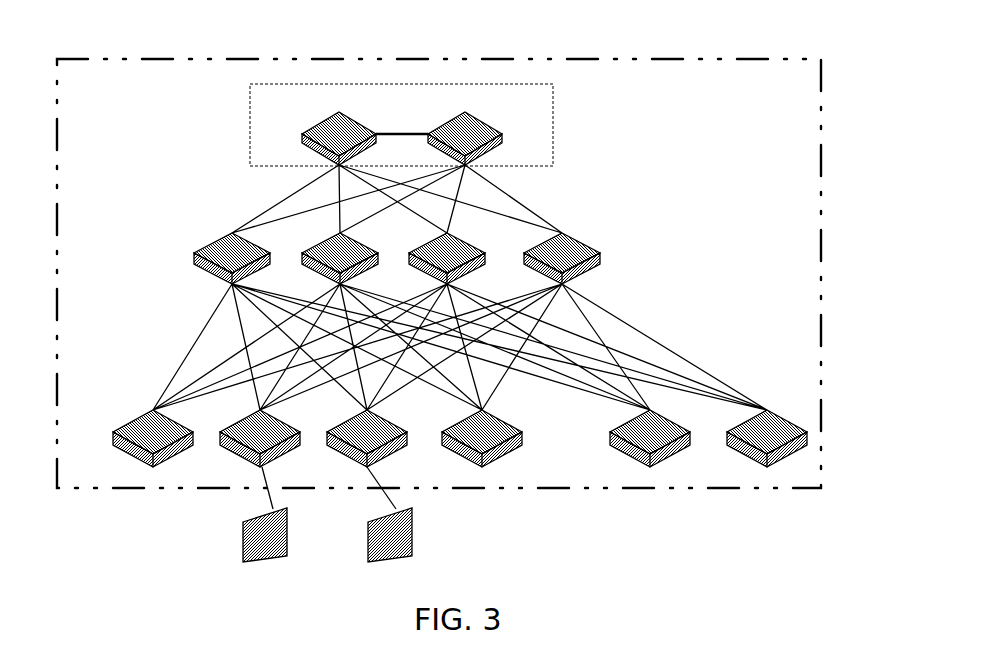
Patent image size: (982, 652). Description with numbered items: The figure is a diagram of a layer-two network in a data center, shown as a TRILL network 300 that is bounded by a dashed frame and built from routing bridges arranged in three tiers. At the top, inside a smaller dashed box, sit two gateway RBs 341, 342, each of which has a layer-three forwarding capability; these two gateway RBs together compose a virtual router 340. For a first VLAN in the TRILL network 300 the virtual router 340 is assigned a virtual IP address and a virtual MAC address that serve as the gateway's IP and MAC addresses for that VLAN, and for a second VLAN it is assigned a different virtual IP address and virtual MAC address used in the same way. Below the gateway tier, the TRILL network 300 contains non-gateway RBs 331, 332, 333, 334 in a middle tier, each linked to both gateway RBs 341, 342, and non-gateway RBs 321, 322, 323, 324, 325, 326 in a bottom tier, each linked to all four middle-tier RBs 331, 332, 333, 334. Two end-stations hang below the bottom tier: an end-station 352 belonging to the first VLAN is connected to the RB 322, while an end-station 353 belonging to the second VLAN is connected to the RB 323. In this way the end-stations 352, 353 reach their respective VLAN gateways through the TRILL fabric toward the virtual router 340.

The TRILL network 300 is at (823, 148).
The virtual router 340 is at (556, 104).
The gateway RB 341 is at (303, 134).
The gateway RB 342 is at (429, 134).
The non-gateway RB 331 is at (194, 252).
The non-gateway RB 332 is at (303, 252).
The non-gateway RB 333 is at (410, 252).
The non-gateway RB 334 is at (525, 252).
The non-gateway RB 321 is at (114, 431).
The non-gateway RB 322 is at (221, 431).
The non-gateway RB 323 is at (328, 431).
The non-gateway RB 324 is at (443, 431).
The non-gateway RB 325 is at (611, 431).
The non-gateway RB 326 is at (728, 431).
The end-station 352 is at (264, 526).
The end-station 353 is at (389, 526).